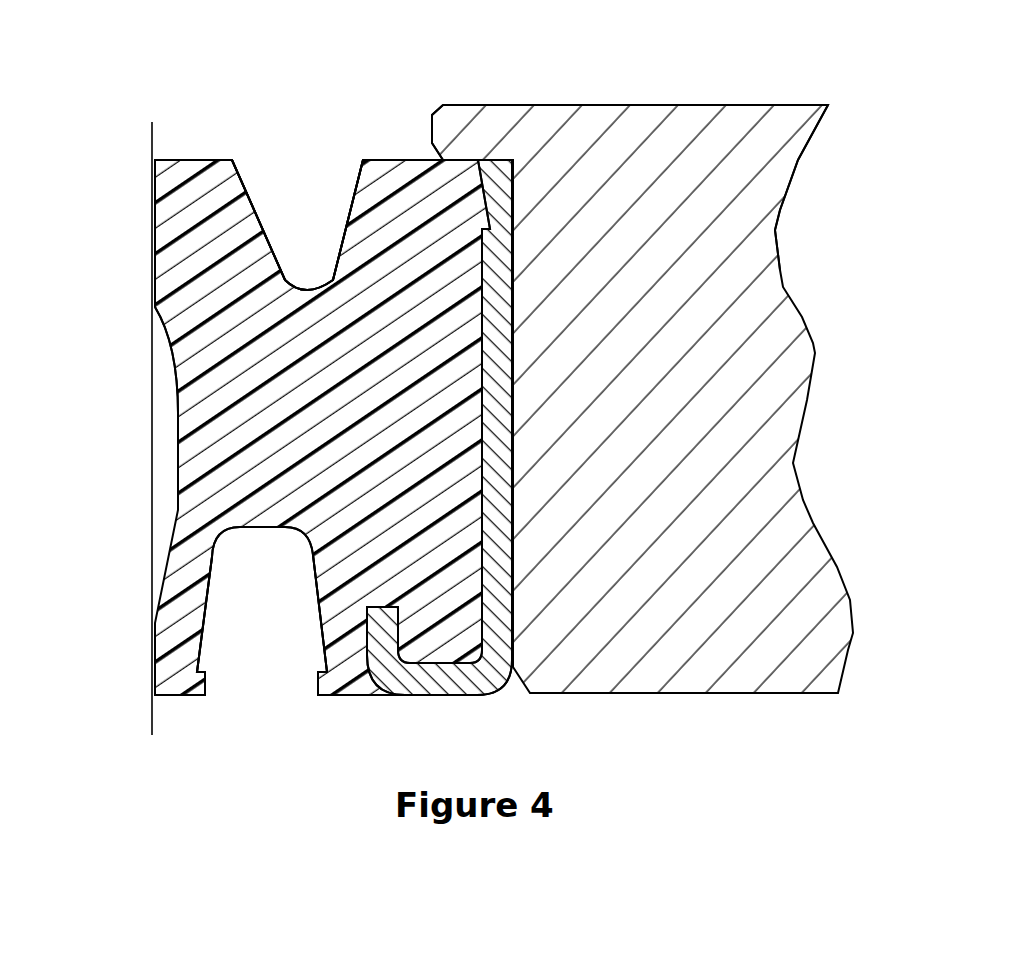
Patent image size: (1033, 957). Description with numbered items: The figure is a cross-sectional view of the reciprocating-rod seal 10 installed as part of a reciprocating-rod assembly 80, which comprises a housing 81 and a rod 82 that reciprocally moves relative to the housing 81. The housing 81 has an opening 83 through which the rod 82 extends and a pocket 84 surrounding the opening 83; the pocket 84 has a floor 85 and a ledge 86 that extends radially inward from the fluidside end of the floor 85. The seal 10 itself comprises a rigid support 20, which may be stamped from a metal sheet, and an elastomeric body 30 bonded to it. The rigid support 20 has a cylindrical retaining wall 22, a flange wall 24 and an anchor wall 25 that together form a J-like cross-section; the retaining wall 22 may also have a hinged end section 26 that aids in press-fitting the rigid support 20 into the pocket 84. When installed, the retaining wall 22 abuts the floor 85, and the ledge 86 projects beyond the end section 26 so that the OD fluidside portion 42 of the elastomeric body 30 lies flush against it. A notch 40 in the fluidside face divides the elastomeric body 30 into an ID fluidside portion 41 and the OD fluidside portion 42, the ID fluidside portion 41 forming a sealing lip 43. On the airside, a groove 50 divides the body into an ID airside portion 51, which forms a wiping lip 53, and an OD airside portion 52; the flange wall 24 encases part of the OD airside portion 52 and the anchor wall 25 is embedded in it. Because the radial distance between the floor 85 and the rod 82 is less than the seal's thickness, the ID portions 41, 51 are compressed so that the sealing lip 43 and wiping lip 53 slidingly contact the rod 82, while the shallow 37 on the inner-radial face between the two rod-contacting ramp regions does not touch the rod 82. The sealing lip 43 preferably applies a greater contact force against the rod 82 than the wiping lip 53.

The reciprocating-rod seal 10 is at (304, 74).
The rigid support 20 is at (533, 546).
The cylindrical retaining wall 22 is at (513, 315).
The flange wall 24 is at (443, 695).
The anchor wall 25 is at (403, 618).
The hinged end section 26 is at (513, 215).
The elastomeric body 30 is at (353, 683).
The shallow 37 is at (178, 425).
The notch 40 is at (315, 237).
The ID fluidside portion 41 is at (210, 237).
The OD fluidside portion 42 is at (415, 231).
The sealing lip 43 is at (152, 193).
The groove 50 is at (267, 656).
The ID airside portion 51 is at (197, 619).
The OD airside portion 52 is at (398, 582).
The wiping lip 53 is at (153, 653).
The reciprocating-rod assembly 80 is at (676, 95).
The housing 81 is at (700, 390).
The rod 82 is at (90, 364).
The opening 83 is at (170, 93).
The pocket 84 is at (334, 176).
The floor 85 is at (517, 465).
The ledge 86 is at (455, 160).